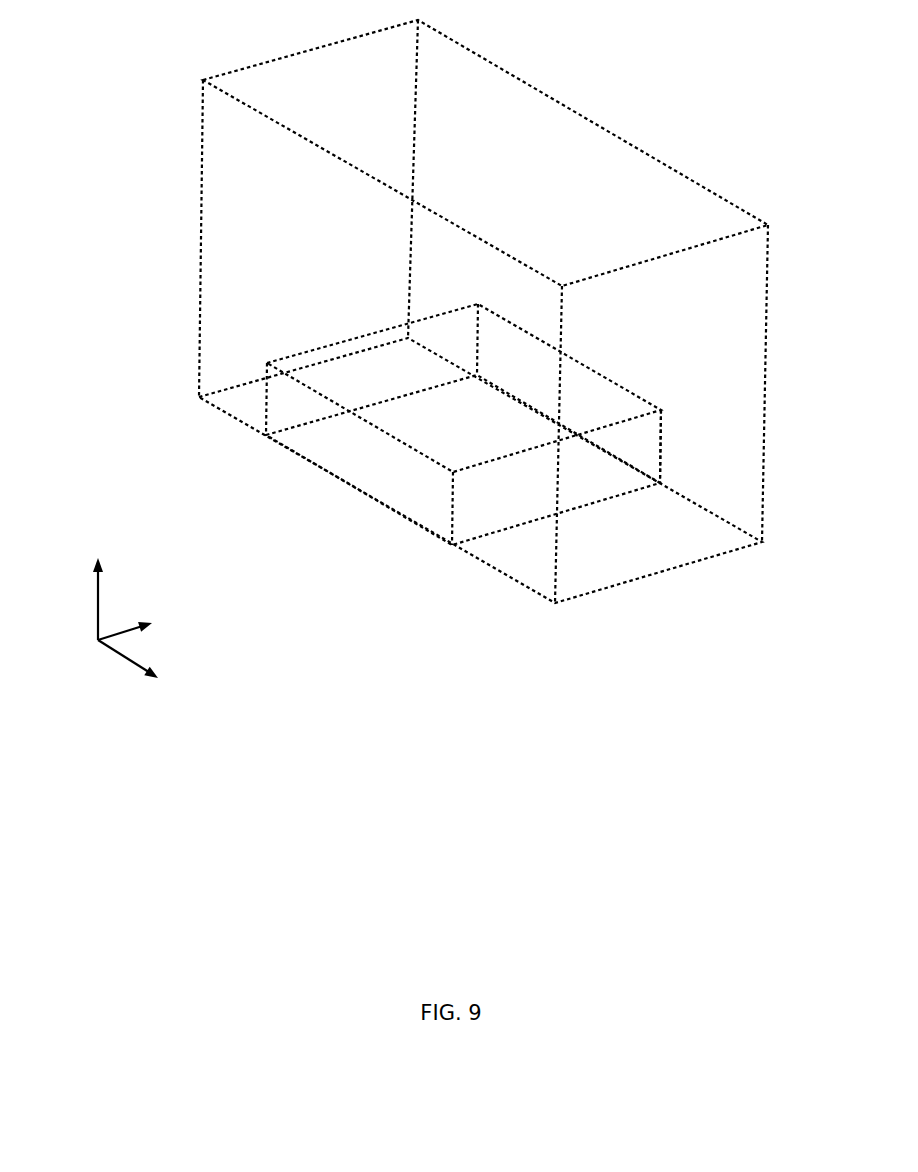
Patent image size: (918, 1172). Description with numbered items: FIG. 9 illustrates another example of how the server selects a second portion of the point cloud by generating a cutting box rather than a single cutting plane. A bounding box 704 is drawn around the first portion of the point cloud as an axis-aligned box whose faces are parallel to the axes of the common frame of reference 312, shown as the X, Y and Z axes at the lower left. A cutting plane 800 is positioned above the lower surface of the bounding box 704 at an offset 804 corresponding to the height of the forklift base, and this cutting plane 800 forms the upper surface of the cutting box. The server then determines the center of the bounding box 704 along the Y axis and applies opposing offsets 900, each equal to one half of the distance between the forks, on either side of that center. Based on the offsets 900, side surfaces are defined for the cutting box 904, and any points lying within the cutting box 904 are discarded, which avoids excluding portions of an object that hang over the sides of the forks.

The bounding box 704 is at (690, 582).
The cutting plane 800 is at (348, 375).
The offset 804 is at (180, 332).
The opposing offsets 900 is at (418, 558).
The cutting box 904 is at (676, 443).
The common frame of reference 312 is at (110, 652).